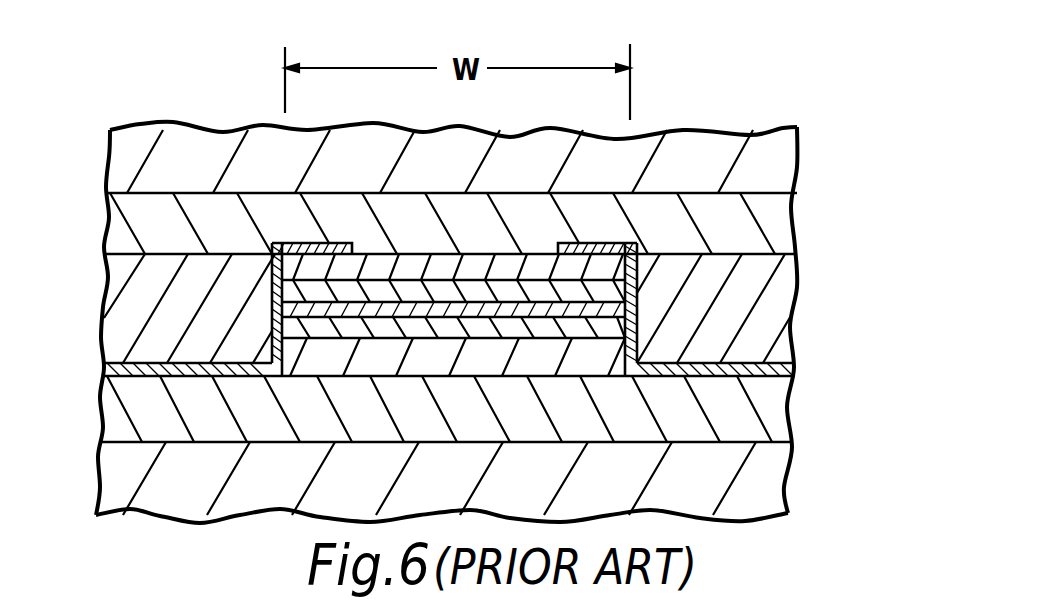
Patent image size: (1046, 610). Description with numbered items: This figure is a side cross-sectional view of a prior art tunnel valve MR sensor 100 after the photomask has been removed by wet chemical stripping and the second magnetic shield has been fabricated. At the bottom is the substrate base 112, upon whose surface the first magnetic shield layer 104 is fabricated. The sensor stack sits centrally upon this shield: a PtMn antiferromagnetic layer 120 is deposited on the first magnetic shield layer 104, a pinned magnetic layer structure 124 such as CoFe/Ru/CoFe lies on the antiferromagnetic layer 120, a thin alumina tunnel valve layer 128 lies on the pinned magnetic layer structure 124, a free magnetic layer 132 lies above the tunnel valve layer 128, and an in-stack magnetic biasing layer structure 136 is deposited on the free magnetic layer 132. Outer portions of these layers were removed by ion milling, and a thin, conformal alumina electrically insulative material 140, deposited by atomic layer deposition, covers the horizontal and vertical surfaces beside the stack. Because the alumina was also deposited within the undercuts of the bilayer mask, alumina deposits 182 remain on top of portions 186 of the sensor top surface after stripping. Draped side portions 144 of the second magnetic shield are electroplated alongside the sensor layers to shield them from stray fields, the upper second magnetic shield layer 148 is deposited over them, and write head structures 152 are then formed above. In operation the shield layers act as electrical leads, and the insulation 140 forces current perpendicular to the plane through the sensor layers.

The tunnel valve MR sensor 100 is at (188, 109).
The write head structures 152 is at (683, 155).
The upper second magnetic shield layer 148 is at (770, 220).
The side portions of the second magnetic shield 144 is at (132, 316).
The electrically insulative material 140 is at (767, 372).
The first magnetic shield layer 104 is at (768, 408).
The substrate base 112 is at (758, 477).
The alumina deposits 182 is at (330, 242).
The portions of the sensor top surface 186 is at (288, 243).
The in-stack magnetic biasing layer structure 136 is at (605, 267).
The free magnetic layer 132 is at (290, 292).
The tunnel valve layer 128 is at (610, 311).
The pinned magnetic layer structure 124 is at (290, 330).
The antiferromagnetic layer 120 is at (492, 358).